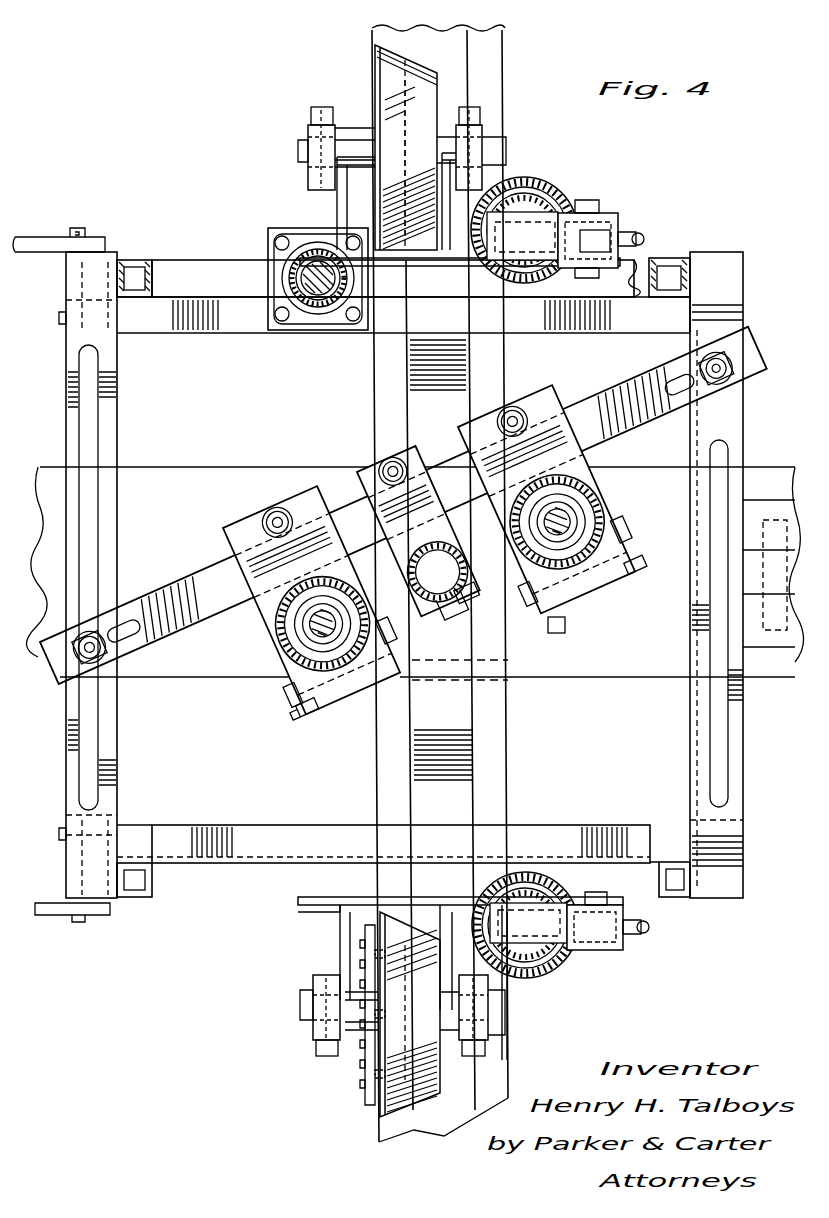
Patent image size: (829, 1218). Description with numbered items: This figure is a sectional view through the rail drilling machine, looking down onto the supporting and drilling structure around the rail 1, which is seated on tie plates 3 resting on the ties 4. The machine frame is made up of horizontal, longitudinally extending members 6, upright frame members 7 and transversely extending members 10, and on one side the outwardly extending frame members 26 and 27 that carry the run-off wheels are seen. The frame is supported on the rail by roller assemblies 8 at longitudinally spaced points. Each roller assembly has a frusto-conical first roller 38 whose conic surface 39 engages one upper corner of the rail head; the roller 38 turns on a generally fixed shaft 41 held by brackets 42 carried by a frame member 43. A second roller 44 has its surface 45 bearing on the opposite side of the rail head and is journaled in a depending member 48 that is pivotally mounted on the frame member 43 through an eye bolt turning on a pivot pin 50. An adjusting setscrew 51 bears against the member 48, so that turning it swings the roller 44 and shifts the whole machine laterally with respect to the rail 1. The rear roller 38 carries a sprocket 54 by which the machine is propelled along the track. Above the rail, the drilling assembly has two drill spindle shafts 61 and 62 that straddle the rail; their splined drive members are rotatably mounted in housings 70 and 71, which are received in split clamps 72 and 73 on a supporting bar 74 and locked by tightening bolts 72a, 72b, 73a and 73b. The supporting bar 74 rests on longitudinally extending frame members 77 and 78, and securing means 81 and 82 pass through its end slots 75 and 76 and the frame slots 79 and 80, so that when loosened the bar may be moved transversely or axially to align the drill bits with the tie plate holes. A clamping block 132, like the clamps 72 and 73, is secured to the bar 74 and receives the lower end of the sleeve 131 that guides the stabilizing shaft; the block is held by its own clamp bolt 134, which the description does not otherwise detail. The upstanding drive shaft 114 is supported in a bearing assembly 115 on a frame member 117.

The rail 1 is at (455, 78).
The tie plate 3 is at (545, 680).
The tie 4 is at (207, 678).
The horizontal frame member 6 is at (638, 258).
The upright frame member 7 is at (135, 258).
The roller assembly 8 is at (530, 154).
The transversely extending frame member 10 is at (762, 505).
The outwardly extending frame member 26 is at (58, 918).
The outwardly extending frame member 27 is at (38, 240).
The first roller 38 is at (378, 72).
The conic surface 39 is at (405, 65).
The shaft 41 is at (492, 146).
The bracket 42 is at (308, 125).
The frame member 43 is at (425, 268).
The second roller 44 is at (525, 171).
The surface 45 is at (525, 215).
The depending member 48 is at (572, 215).
The pivot pin 50 is at (596, 207).
The adjusting setscrew 51 is at (642, 234).
The sprocket 54 is at (372, 1090).
The drill spindle shaft 61 is at (312, 632).
The drill spindle shaft 62 is at (568, 522).
The housing 70 is at (290, 680).
The housing 71 is at (590, 496).
The split clamp 72 is at (265, 618).
The tightening bolt 72a is at (272, 516).
The tightening bolt 72b is at (282, 720).
The split clamp 73 is at (610, 536).
The tightening bolt 73a is at (512, 410).
The tightening bolt 73b is at (632, 572).
The supporting bar 74 is at (612, 430).
The slot 75 is at (692, 370).
The slot 76 is at (122, 640).
The longitudinally extending frame member 77 is at (700, 706).
The longitudinally extending frame member 78 is at (108, 752).
The slot 79 is at (722, 440).
The slot 80 is at (88, 768).
The bolt and nut 81 is at (733, 386).
The securing means 82 is at (50, 670).
The upstanding shaft 114 is at (318, 262).
The bearing assembly 115 is at (292, 272).
The frame member 117 is at (258, 330).
The sleeve 131 is at (440, 618).
The clamping block 132 is at (418, 448).
The pivot bolt 134 is at (386, 466).